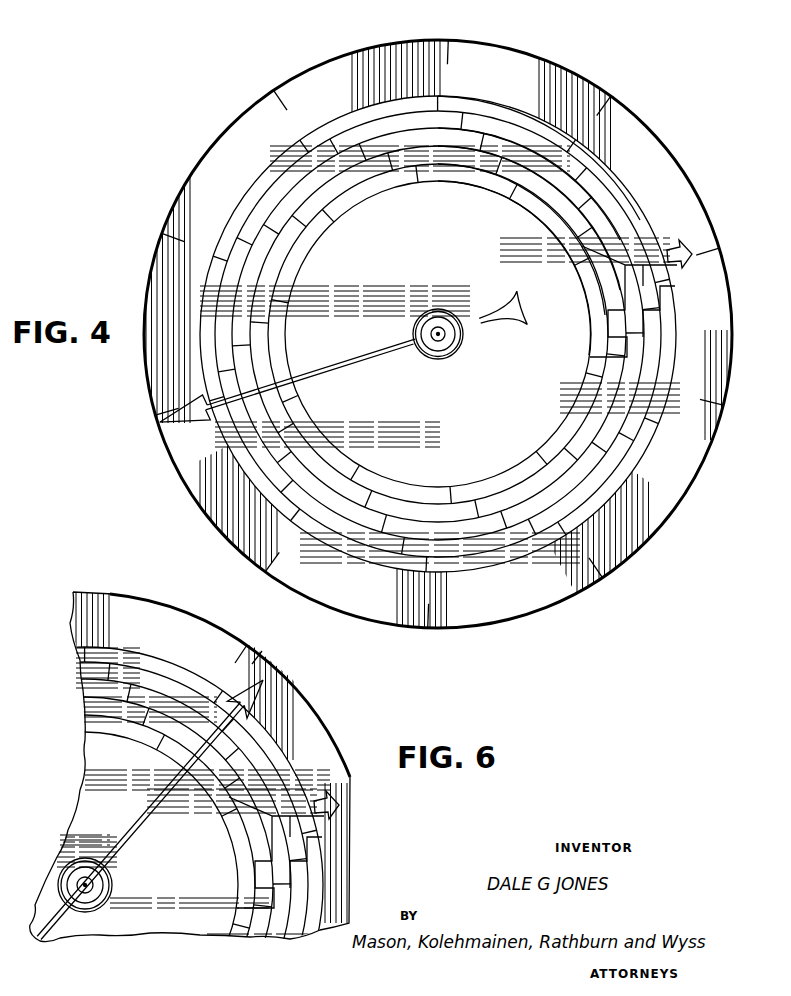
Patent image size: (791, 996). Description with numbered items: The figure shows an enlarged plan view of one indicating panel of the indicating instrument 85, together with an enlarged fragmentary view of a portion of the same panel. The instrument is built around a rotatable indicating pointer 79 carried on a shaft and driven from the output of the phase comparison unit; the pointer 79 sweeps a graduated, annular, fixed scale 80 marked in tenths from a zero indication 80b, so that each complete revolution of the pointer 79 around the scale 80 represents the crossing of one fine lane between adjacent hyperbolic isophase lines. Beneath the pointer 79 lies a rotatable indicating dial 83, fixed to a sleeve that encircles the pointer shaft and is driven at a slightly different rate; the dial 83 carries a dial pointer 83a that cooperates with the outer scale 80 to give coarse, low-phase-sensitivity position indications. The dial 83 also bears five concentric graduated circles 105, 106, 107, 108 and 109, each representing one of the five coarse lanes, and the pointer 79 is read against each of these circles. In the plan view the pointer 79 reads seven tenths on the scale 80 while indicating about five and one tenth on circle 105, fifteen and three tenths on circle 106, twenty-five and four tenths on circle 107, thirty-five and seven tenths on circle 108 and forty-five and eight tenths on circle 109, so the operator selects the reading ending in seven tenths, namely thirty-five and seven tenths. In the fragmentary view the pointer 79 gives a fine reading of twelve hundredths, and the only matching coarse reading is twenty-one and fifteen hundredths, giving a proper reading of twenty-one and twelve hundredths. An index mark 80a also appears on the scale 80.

In FIG. 4, the indicating pointer 79 is at (349, 361).
In FIG. 6, the indicating pointer 79 is at (152, 805).
In FIG. 4, the graduated annular fixed scale 80 is at (657, 531).
In FIG. 6, the graduated annular fixed scale 80 is at (311, 723).
In FIG. 4, the index mark 80a is at (433, 607).
In FIG. 6, the index mark 80a is at (260, 657).
In FIG. 4, the zero indication 80b is at (451, 40).
In FIG. 4, the rotatable indicating dial 83 is at (560, 548).
In FIG. 6, the rotatable indicating dial 83 is at (85, 771).
In FIG. 4, the dial pointer 83a is at (688, 243).
In FIG. 6, the dial pointer 83a is at (340, 806).
In FIG. 4, the indicating instrument 85 is at (634, 96).
In FIG. 4, the graduated circle 105 is at (636, 222).
In FIG. 4, the graduated circle 106 is at (608, 200).
In FIG. 4, the graduated circle 107 is at (610, 237).
In FIG. 4, the graduated circle 108 is at (605, 263).
In FIG. 4, the graduated circle 109 is at (587, 362).